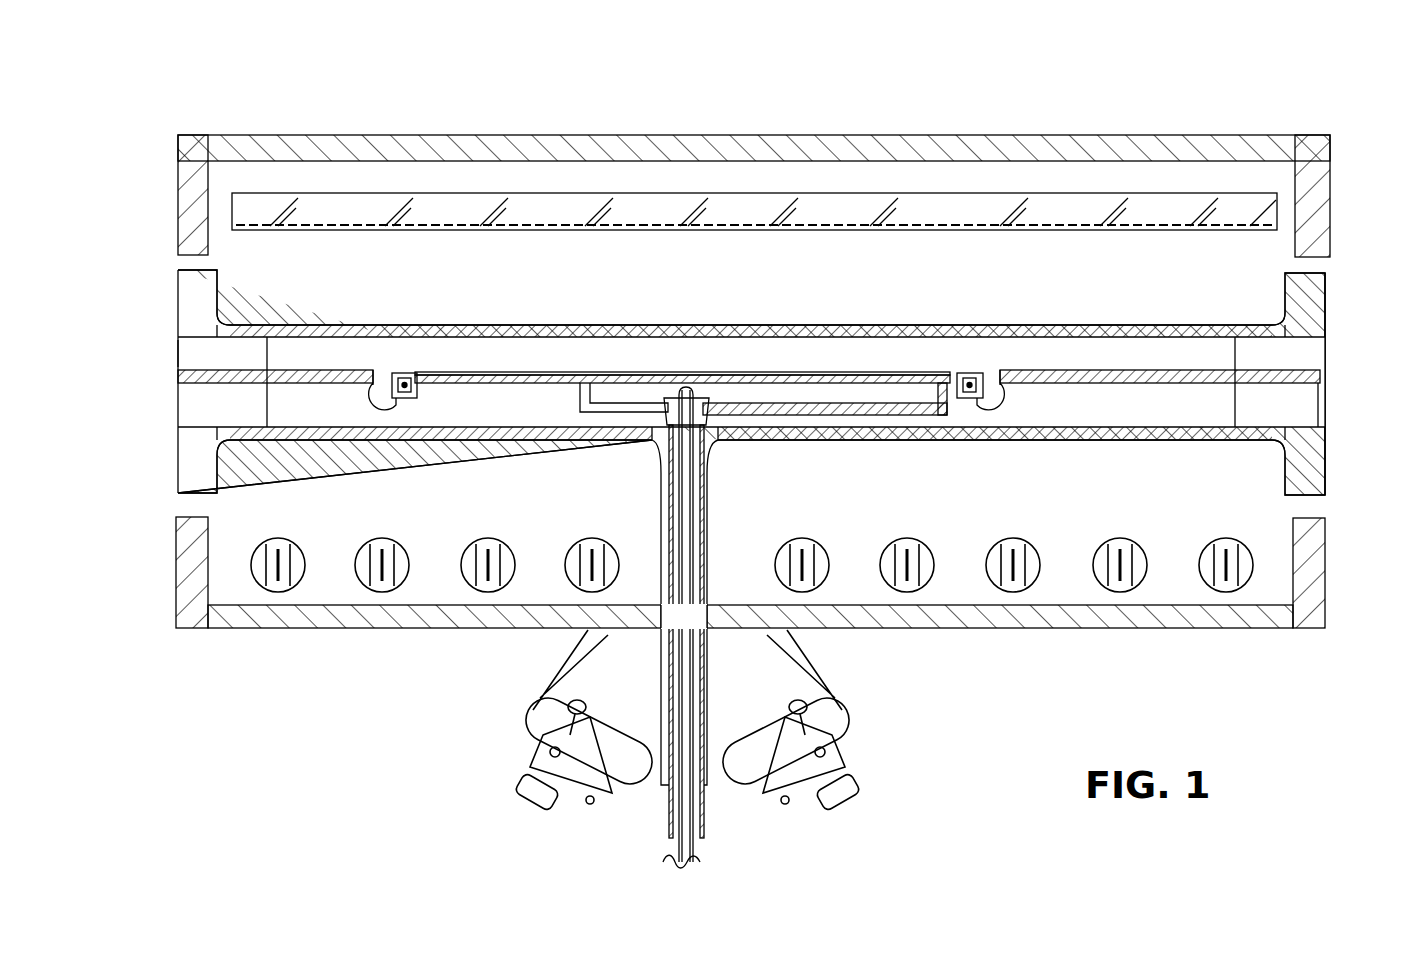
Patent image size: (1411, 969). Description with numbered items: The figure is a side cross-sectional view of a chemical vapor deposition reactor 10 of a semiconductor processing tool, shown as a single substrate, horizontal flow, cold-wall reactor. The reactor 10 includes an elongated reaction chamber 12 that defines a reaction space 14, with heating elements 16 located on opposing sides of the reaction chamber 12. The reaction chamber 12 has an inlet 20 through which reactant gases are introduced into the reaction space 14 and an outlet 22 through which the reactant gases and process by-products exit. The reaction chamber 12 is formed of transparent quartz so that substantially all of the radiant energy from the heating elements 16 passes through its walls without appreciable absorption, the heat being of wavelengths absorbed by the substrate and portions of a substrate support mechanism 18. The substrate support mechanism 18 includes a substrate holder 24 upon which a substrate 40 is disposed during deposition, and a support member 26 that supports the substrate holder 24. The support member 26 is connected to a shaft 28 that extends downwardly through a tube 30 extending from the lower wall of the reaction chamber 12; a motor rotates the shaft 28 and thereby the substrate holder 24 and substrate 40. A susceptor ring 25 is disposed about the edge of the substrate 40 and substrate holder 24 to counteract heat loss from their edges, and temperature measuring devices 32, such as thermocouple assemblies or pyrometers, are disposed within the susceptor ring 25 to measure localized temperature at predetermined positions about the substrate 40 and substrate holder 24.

The chemical vapor deposition reactor 10 is at (974, 106).
The reaction chamber 12 is at (1088, 329).
The reaction space 14 is at (735, 364).
The heating elements 16 is at (325, 215).
The substrate support mechanism 18 is at (908, 415).
The inlet 20 is at (178, 360).
The outlet 22 is at (1328, 357).
The substrate holder 24 is at (943, 376).
The susceptor ring 25 is at (390, 372).
The support member 26 is at (613, 405).
The shaft 28 is at (700, 502).
The tube 30 is at (710, 527).
The temperature measuring devices 32 is at (418, 374).
The substrate 40 is at (855, 372).